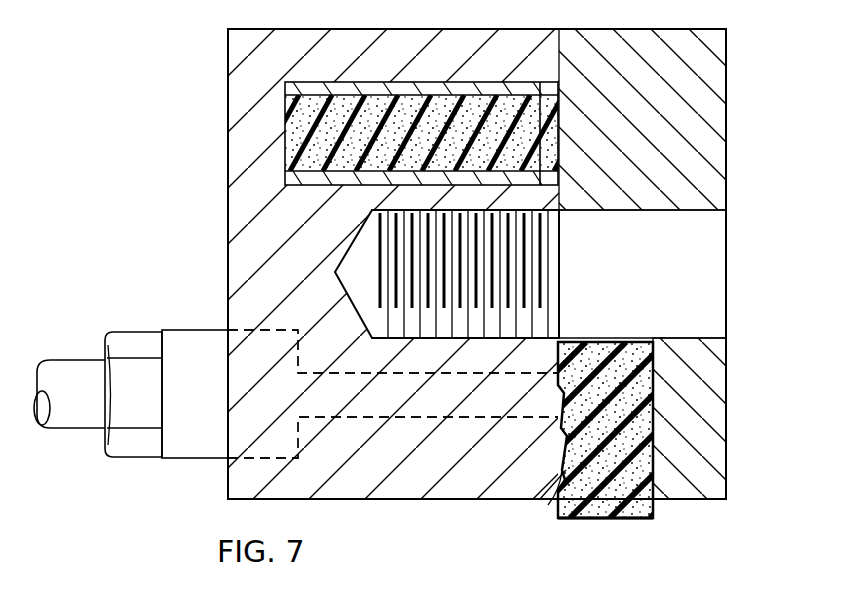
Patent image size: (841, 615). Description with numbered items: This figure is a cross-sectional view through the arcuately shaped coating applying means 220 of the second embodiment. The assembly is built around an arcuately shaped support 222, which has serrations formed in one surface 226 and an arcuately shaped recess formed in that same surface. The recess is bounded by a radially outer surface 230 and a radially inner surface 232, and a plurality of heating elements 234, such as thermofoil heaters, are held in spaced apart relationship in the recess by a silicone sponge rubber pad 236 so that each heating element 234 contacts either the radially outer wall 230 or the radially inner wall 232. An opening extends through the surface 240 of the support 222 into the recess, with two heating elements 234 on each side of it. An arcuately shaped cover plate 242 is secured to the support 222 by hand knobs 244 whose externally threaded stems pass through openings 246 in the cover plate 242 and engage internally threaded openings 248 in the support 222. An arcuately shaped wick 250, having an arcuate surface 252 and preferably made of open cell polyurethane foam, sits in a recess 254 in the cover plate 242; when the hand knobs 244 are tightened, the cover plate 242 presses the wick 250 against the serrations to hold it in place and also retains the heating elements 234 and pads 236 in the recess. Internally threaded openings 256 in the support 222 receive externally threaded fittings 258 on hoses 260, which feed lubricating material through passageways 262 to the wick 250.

The arcuately shaped coating applying means 220 is at (176, 170).
The arcuately shaped support 222 is at (240, 84).
The one surface 226 is at (42, 2).
The radially outer surface 230 is at (358, 82).
The radially inner surface 232 is at (341, 190).
The heating element 234 is at (531, 90).
The silicone sponge rubber pad 236 is at (556, 143).
The surface 240 is at (226, 488).
The arcuately shaped cover plate 242 is at (660, 111).
The hand knob 244 is at (566, 470).
The opening 246 is at (696, 217).
The internally threaded opening 248 is at (535, 285).
The arcuately shaped wick 250 is at (645, 428).
The arcuate surface 252 is at (623, 516).
The recess 254 is at (650, 384).
The internally threaded opening 256 is at (283, 327).
The externally threaded fitting 258 is at (190, 443).
The hose 260 is at (77, 417).
The passageway 262 is at (414, 414).